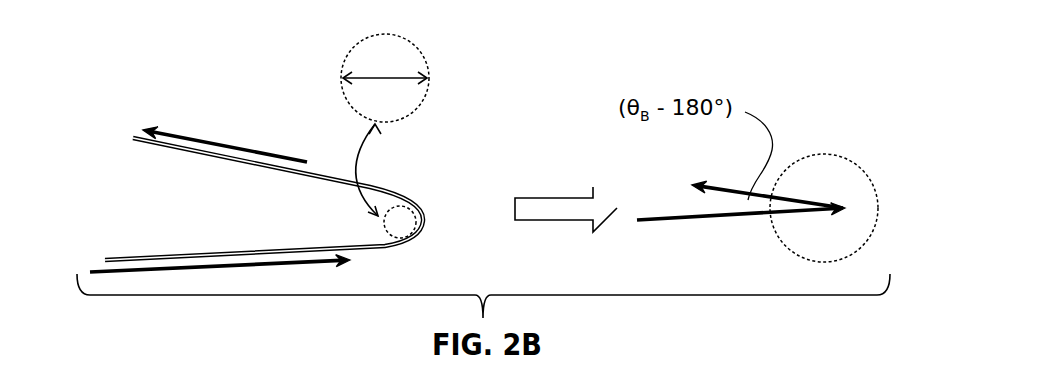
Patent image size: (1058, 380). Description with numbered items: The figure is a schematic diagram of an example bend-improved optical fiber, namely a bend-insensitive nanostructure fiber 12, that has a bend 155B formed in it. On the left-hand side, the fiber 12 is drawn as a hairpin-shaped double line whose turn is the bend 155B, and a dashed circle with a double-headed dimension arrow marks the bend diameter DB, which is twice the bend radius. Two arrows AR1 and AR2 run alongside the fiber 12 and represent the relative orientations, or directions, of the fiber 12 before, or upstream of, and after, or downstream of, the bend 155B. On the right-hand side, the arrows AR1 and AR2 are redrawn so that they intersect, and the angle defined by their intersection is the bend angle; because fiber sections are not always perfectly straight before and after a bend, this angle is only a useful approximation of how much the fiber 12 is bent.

The bend-insensitive nanostructure fiber 12 is at (234, 155).
The bend 155B is at (424, 220).
The bend diameter DB is at (383, 79).
The arrow AR1 is at (98, 262).
The arrow AR2 is at (186, 136).